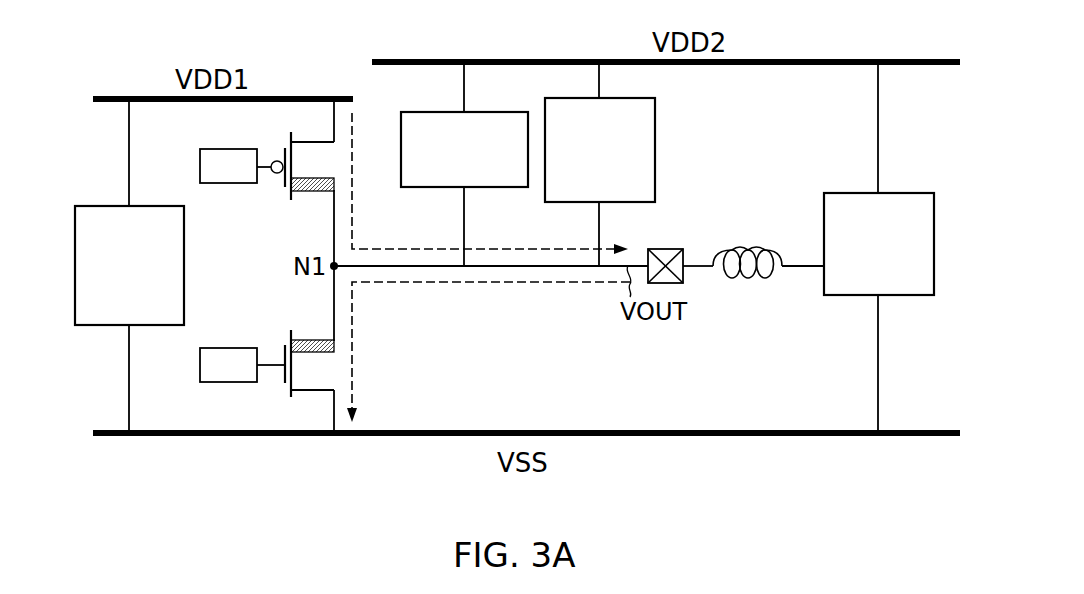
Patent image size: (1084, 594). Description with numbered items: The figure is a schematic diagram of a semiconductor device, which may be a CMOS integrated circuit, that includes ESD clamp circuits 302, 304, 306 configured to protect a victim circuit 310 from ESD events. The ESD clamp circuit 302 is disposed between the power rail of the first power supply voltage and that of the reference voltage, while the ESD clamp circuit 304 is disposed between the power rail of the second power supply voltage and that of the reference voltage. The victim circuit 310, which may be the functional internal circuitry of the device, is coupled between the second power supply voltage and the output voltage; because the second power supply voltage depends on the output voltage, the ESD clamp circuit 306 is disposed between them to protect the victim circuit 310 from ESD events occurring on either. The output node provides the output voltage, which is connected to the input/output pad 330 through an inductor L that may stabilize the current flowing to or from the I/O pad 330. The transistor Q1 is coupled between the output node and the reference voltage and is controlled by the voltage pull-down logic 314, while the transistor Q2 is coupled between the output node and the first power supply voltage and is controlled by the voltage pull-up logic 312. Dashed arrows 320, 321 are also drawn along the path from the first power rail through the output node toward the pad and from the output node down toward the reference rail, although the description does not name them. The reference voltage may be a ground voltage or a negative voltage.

The ESD clamp circuit 302 is at (88, 206).
The ESD clamp circuit 304 is at (836, 193).
The ESD clamp circuit 306 is at (655, 129).
The victim circuit 310 is at (431, 112).
The voltage pull-up logic 312 is at (222, 149).
The voltage pull-down logic 314 is at (228, 382).
The ESD current path from VDD1 to VOUT 320 is at (352, 212).
The ESD current path from VOUT to VSS 321 is at (352, 330).
The input/output pad 330 is at (665, 249).
The transistor Q1 is at (302, 363).
The transistor Q2 is at (302, 166).
The inductor L is at (747, 279).